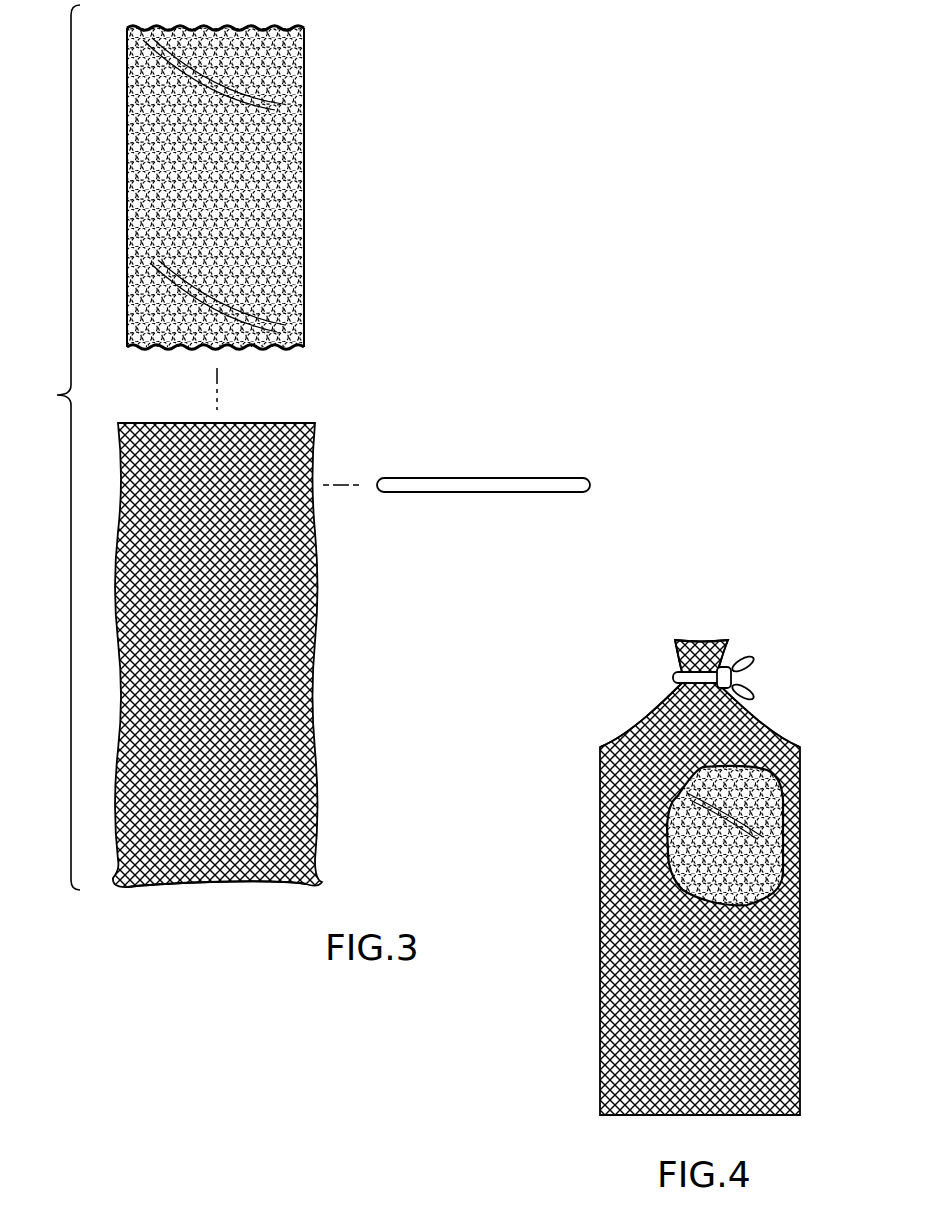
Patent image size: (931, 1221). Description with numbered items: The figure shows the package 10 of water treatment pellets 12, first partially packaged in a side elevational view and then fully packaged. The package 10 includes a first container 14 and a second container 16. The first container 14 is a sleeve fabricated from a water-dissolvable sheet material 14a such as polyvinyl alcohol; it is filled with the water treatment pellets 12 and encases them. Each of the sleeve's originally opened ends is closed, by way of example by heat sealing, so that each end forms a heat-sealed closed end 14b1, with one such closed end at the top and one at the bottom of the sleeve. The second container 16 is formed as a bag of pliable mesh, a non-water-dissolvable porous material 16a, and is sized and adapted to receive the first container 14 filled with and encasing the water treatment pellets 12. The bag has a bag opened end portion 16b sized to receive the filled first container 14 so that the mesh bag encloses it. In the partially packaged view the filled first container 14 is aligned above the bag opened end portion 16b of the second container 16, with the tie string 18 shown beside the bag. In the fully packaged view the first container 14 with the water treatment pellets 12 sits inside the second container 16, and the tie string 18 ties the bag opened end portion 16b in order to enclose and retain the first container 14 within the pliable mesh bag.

In FIG. 3, the package 10 is at (55, 447).
In FIG. 4, the package 10 is at (743, 620).
In FIG. 3, the water treatment pellets 12 is at (280, 208).
In FIG. 4, the water treatment pellets 12 is at (765, 865).
In FIG. 3, the first container 14 is at (290, 47).
In FIG. 4, the first container 14 is at (757, 788).
In FIG. 3, the water-dissolvable sheet material 14a is at (297, 302).
In FIG. 3, the heat-sealed closed end 14b1 is at (280, 26).
In FIG. 3, the second container 16 is at (303, 667).
In FIG. 4, the second container 16 is at (620, 998).
In FIG. 3, the non-water-dissolvable porous material 16a is at (308, 838).
In FIG. 3, the bag opened end portion 16b is at (303, 512).
In FIG. 4, the bag opened end portion 16b is at (695, 693).
In FIG. 3, the tie string 18 is at (490, 478).
In FIG. 4, the tie string 18 is at (675, 675).